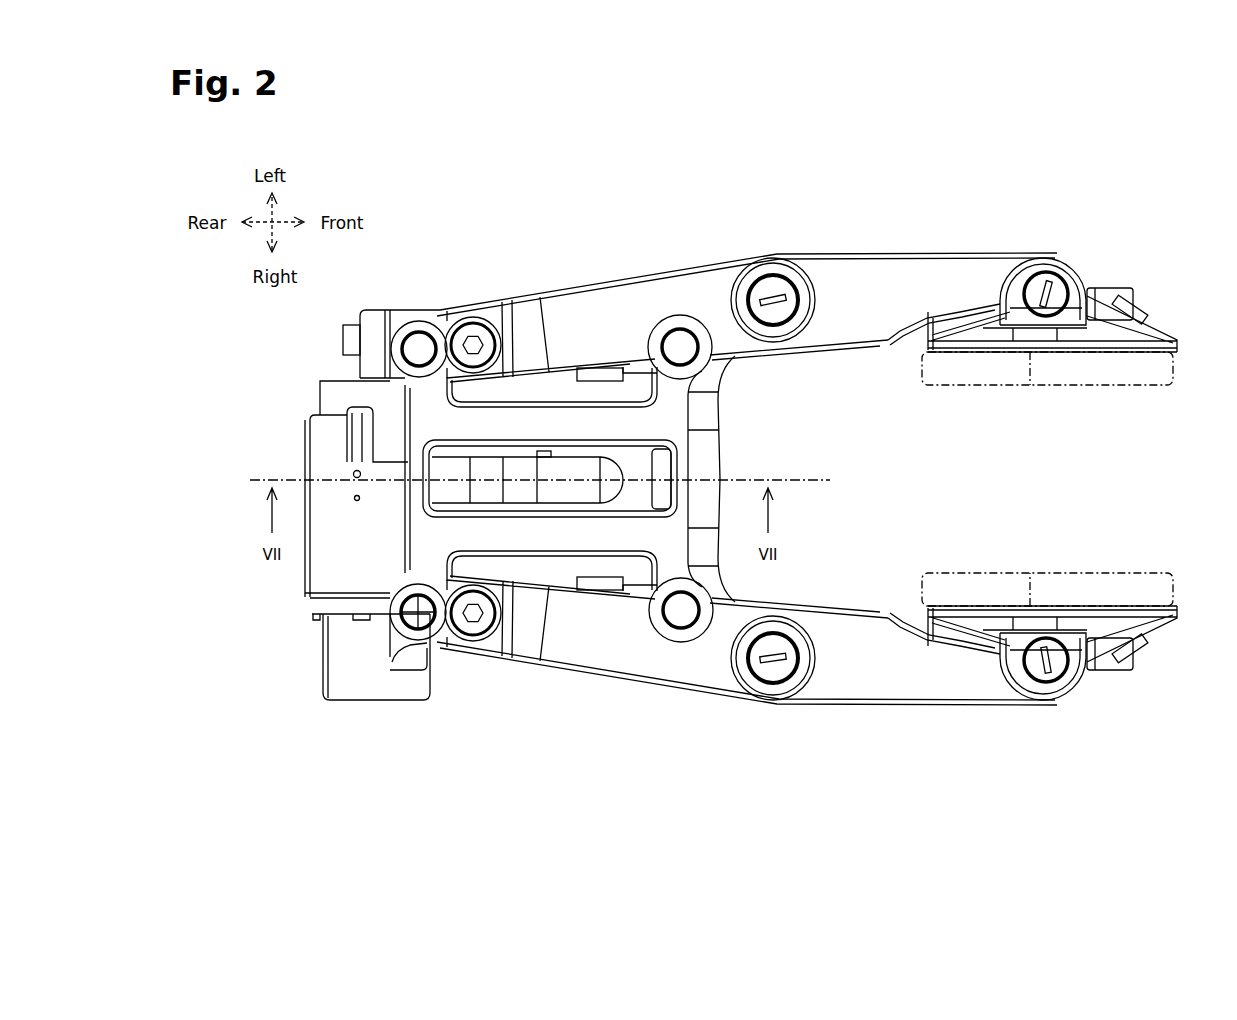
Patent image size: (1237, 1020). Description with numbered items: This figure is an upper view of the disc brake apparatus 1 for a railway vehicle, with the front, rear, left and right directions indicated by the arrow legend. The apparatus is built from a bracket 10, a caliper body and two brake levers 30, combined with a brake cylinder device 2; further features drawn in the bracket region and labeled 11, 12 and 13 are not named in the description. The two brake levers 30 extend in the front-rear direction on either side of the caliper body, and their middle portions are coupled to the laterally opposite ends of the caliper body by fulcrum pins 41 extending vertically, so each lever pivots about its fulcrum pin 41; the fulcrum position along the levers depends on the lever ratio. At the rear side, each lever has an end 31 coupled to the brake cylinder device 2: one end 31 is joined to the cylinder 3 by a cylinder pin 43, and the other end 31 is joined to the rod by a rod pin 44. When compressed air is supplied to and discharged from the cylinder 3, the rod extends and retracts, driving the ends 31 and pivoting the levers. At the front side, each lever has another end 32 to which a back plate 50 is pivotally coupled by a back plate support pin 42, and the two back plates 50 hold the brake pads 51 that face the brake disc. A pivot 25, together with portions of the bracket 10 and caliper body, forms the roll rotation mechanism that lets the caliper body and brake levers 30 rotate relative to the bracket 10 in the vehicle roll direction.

The disc brake apparatus 1 is at (1157, 210).
The brake cylinder device 2 is at (307, 725).
The cylinder 3 is at (296, 604).
The bracket 10 is at (553, 372).
The slot 11 is at (580, 392).
The rib 12 is at (650, 423).
The boss 13 is at (399, 318).
The pivot 25 is at (688, 470).
The brake lever 30 is at (841, 242).
The end 31 is at (463, 308).
The end 32 is at (988, 273).
The fulcrum pin 41 is at (770, 256).
The back plate support pin 42 is at (1046, 270).
The cylinder pin 43 is at (441, 325).
The rod pin 44 is at (445, 645).
The back plate 50 is at (1140, 300).
The brake pad 51 is at (1073, 370).